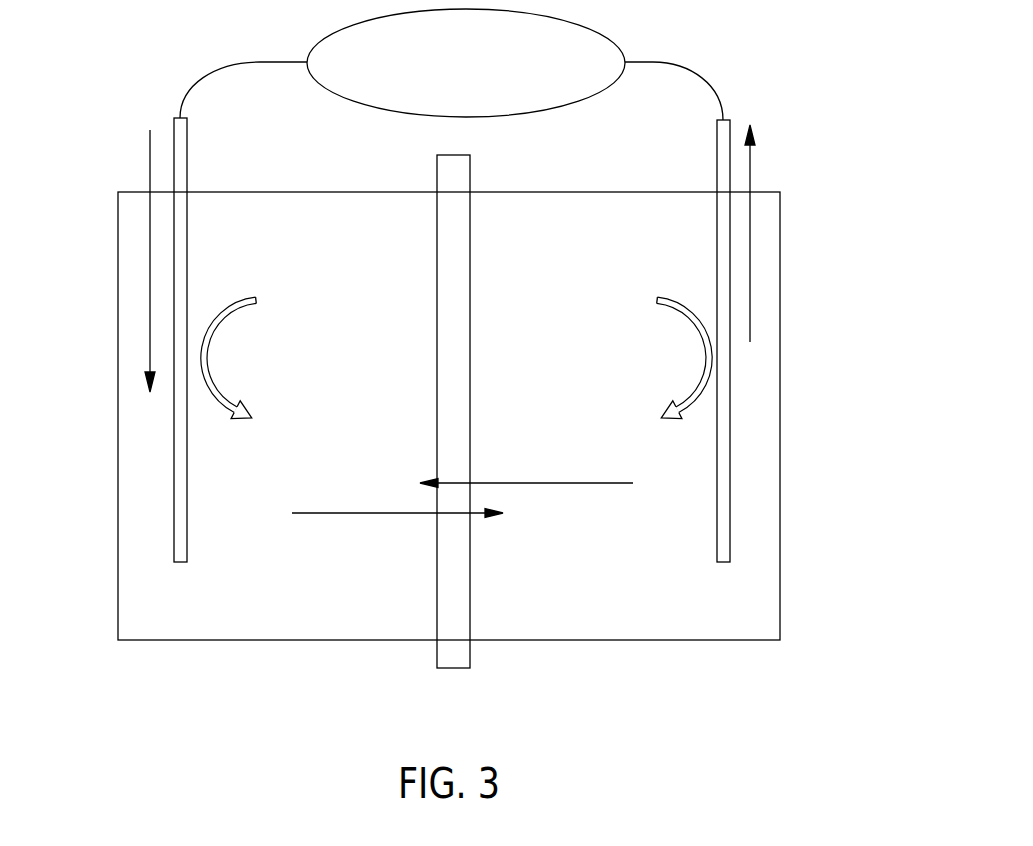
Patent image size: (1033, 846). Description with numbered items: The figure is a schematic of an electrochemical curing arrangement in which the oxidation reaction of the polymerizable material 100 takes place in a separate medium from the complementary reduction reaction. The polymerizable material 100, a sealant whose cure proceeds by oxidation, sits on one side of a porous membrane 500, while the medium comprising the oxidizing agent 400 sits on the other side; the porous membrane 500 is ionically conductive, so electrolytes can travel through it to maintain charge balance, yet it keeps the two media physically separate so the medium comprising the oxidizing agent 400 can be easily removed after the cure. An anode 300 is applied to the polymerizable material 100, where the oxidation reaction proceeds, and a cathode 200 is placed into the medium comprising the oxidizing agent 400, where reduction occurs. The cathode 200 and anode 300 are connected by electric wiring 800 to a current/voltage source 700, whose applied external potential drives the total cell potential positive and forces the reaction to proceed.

The polymerizable material 100 is at (583, 623).
The cathode 200 is at (765, 478).
The anode 300 is at (135, 469).
The medium comprising the oxidizing agent 400 is at (323, 623).
The porous membrane 500 is at (458, 657).
The current/voltage source 700 is at (482, 77).
The electric wiring 800 is at (697, 70).